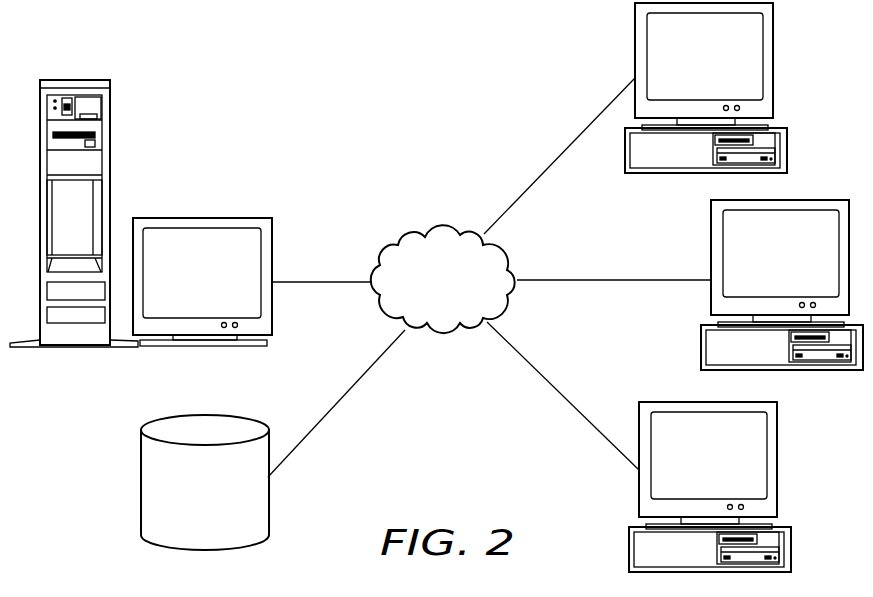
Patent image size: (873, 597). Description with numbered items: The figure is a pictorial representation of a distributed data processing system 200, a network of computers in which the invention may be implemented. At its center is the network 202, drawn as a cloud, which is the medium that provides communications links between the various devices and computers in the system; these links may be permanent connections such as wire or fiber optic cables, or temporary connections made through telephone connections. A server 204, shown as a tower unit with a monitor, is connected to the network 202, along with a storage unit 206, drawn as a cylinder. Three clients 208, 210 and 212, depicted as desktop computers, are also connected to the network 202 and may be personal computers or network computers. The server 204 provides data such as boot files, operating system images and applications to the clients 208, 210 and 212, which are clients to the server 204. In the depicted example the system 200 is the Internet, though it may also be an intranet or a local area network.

The distributed data processing system 200 is at (280, 87).
The network 202 is at (425, 308).
The server 204 is at (184, 284).
The storage unit 206 is at (187, 500).
The client 208 is at (687, 71).
The client 210 is at (762, 269).
The client 212 is at (689, 470).